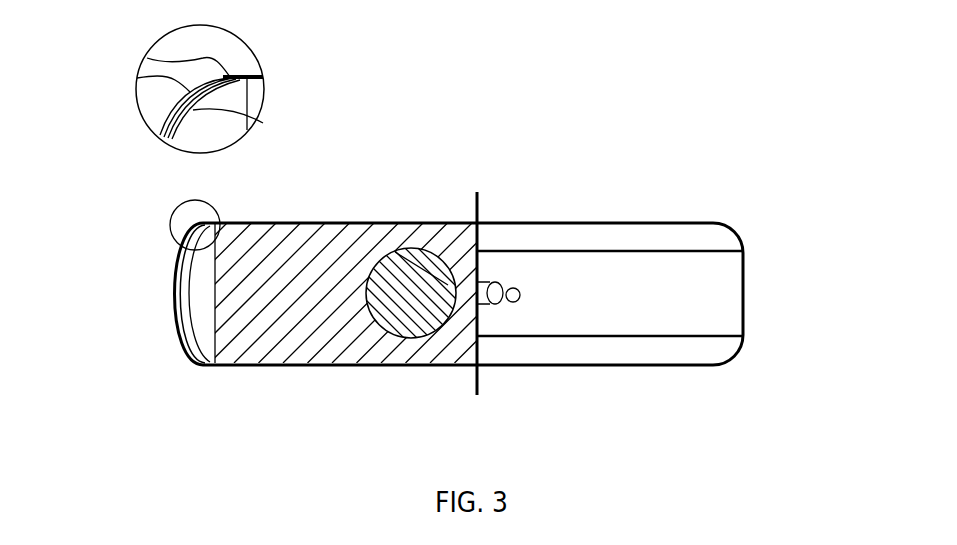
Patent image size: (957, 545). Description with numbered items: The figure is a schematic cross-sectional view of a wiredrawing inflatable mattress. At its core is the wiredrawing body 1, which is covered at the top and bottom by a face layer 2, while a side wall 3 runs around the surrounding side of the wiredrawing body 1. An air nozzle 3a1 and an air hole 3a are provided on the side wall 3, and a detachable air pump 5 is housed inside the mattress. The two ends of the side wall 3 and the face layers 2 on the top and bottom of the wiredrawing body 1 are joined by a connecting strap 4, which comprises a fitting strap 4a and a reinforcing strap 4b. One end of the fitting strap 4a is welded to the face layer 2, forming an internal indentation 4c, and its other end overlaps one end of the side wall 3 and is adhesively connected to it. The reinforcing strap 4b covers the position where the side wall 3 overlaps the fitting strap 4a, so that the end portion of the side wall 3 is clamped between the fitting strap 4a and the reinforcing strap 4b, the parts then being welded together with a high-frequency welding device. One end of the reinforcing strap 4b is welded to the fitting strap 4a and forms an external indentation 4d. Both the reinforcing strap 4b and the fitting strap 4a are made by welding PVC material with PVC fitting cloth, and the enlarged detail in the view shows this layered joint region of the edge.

The wiredrawing body 1 is at (333, 223).
The face layer 2 is at (263, 77).
The side wall 3 is at (180, 250).
The air hole 3a is at (480, 300).
The air nozzle 3a1 is at (513, 296).
The connecting strap 4 is at (190, 348).
The fitting strap 4a is at (263, 123).
The reinforcing strap 4b is at (137, 78).
The internal indentation 4c is at (232, 77).
The external indentation 4d is at (148, 57).
The air pump 5 is at (373, 322).